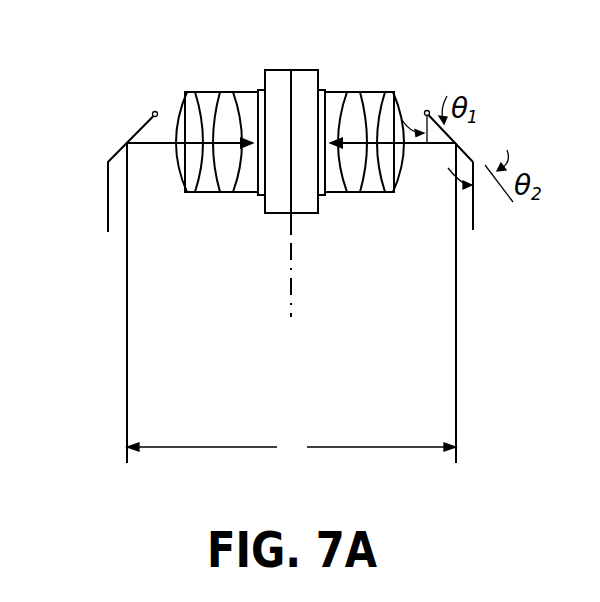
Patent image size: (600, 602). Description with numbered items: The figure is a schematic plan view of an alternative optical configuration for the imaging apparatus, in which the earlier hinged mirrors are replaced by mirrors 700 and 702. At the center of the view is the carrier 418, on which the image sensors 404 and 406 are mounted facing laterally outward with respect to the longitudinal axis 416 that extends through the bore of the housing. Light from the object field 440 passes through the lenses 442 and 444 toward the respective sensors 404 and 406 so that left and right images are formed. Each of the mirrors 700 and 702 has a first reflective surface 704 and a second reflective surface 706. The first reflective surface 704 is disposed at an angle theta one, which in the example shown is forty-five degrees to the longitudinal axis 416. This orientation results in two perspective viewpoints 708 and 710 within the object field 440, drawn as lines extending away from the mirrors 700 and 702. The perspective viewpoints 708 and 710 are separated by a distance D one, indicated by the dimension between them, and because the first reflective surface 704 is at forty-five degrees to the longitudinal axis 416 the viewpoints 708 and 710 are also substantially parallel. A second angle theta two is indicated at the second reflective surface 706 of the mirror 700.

The mirror 700 is at (488, 281).
The mirror 702 is at (115, 152).
The first reflective surface 704 is at (447, 133).
The second reflective surface 706 is at (473, 223).
The perspective viewpoint 708 is at (457, 333).
The perspective viewpoint 710 is at (127, 337).
The image sensor 404 is at (322, 195).
The image sensor 406 is at (261, 195).
The longitudinal axis 416 is at (290, 305).
The carrier 418 is at (292, 70).
The object field 440 is at (313, 414).
The lens 442 is at (392, 92).
The lens 444 is at (225, 93).